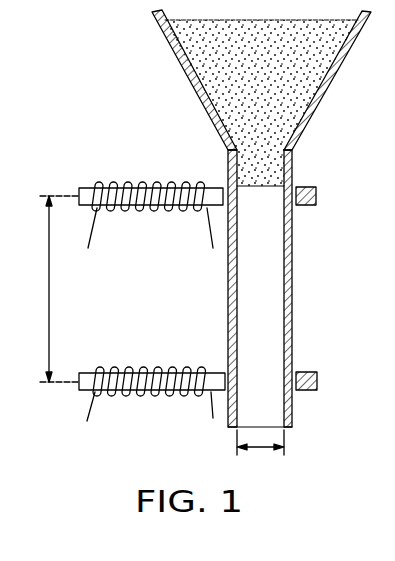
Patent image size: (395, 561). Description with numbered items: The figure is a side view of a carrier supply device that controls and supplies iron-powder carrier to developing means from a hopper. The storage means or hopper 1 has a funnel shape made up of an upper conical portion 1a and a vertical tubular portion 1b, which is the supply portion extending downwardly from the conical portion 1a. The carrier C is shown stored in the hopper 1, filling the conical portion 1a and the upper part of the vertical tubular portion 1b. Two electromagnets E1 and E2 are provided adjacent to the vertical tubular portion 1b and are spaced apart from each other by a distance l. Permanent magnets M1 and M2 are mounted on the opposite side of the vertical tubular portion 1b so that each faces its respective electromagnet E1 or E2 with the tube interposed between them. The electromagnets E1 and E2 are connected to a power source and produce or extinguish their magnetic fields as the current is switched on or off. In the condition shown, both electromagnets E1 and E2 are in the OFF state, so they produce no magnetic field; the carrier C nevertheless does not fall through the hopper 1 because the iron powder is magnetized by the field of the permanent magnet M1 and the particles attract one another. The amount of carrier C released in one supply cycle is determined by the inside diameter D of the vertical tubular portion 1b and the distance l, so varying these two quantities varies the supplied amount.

The hopper 1 is at (249, 218).
The conical portion 1a is at (341, 62).
The vertical tubular portion 1b is at (290, 271).
The carrier C is at (285, 100).
The electromagnet E1 is at (93, 193).
The electromagnet E2 is at (90, 372).
The permanent magnet M1 is at (306, 187).
The permanent magnet M2 is at (307, 372).
The distance l is at (59, 289).
The inside diameter D is at (260, 452).